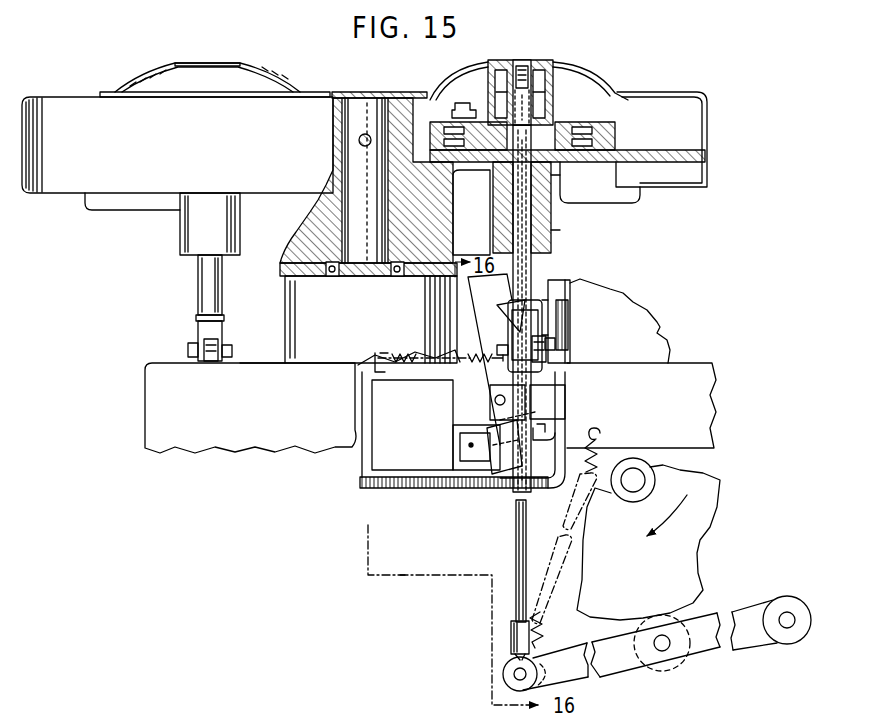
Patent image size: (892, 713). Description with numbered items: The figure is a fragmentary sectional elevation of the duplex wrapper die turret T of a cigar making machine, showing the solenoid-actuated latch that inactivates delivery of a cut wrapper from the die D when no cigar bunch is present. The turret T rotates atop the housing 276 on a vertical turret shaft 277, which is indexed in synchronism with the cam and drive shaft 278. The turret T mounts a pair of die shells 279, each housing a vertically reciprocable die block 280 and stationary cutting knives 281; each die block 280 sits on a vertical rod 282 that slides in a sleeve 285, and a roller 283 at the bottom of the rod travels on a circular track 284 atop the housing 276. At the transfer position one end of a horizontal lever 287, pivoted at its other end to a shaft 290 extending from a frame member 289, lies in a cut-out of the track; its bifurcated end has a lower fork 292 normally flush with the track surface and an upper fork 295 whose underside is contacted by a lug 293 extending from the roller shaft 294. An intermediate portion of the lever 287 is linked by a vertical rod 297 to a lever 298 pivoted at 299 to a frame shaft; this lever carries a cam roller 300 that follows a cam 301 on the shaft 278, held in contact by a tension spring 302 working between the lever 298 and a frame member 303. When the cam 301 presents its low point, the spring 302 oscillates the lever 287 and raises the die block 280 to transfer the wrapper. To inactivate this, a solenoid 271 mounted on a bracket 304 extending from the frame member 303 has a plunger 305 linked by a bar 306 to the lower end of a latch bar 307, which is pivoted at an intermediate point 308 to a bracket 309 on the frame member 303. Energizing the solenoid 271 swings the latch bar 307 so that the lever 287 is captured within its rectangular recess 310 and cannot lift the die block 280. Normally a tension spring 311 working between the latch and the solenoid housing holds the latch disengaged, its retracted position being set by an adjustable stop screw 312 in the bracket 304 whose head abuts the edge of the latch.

The duplex wrapper die turret T is at (63, 90).
The die D is at (221, 56).
The solenoid 271 is at (372, 458).
The housing 276 is at (215, 448).
The vertical turret shaft 277 is at (381, 130).
The cam and drive shaft 278 is at (633, 474).
The die shell 279 is at (265, 82).
The die block 280 is at (191, 60).
The stationary cutting knives 281 is at (484, 66).
The vertical rod 282 is at (196, 286).
The roller 283 is at (211, 361).
The circular track 284 is at (256, 363).
The sleeve 285 is at (553, 220).
The horizontal lever 287 is at (552, 282).
The frame member 289 is at (660, 332).
The shaft 290 is at (562, 308).
The lower fork 292 is at (545, 365).
The lug 293 is at (187, 350).
The roller shaft 294 is at (232, 351).
The upper fork 295 is at (540, 335).
The vertical rod 297 is at (516, 519).
The lever 298 is at (620, 668).
The pivot 299 is at (787, 630).
The cam roller 300 is at (670, 670).
The cam 301 is at (700, 545).
The tension spring 302 is at (565, 584).
The frame member 303 is at (708, 378).
The bracket 304 is at (416, 488).
The solenoid plunger 305 is at (470, 446).
The bar 306 is at (488, 436).
The latch bar 307 is at (478, 293).
The pivot point 308 is at (506, 404).
The bracket 309 is at (555, 398).
The rectangular recess 310 is at (490, 320).
The tension spring 311 is at (458, 364).
The adjustable stop screw 312 is at (558, 430).